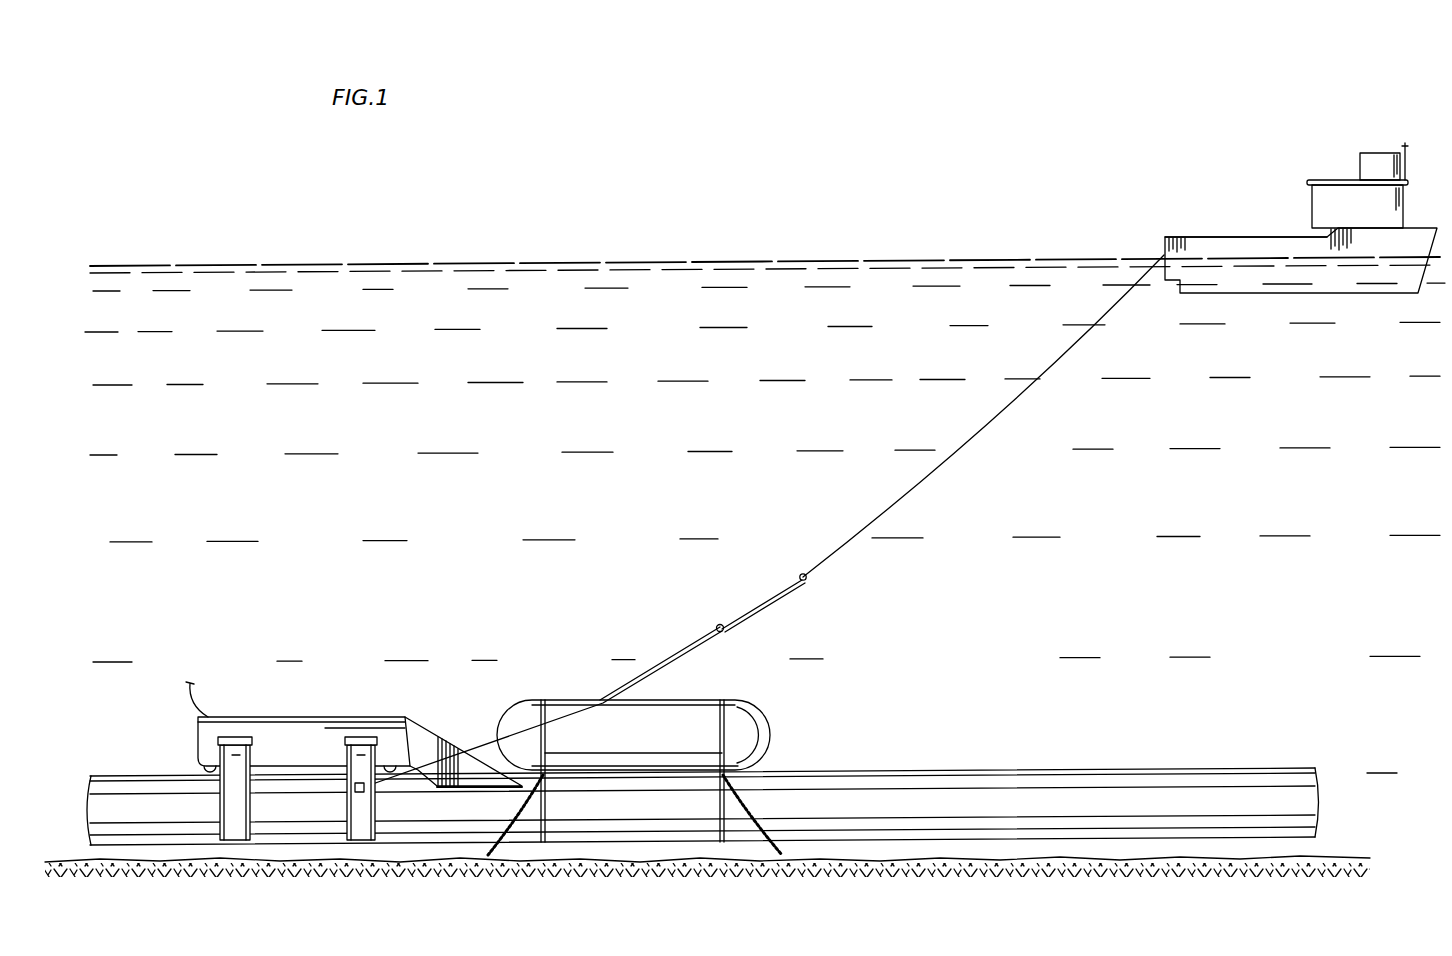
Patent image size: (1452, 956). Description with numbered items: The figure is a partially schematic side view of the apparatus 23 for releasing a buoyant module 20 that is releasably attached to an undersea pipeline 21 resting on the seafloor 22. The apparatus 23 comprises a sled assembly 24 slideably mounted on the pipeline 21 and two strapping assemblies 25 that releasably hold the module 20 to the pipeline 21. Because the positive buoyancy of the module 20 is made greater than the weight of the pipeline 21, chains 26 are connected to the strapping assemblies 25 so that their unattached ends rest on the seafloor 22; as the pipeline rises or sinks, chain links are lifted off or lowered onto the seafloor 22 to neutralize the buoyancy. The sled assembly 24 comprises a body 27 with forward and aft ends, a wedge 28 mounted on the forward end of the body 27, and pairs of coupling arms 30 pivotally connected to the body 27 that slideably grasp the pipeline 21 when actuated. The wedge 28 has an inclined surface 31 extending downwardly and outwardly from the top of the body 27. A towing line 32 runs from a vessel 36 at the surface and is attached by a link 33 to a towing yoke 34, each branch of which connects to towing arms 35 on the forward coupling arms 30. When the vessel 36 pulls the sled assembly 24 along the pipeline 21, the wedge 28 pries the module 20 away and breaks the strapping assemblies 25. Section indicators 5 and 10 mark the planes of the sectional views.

The buoyant module 20 is at (710, 700).
The undersea pipeline 21 is at (1072, 768).
The seafloor 22 is at (1080, 845).
The apparatus for releasing a buoyant module 23 is at (634, 601).
The sled assembly 24 is at (198, 740).
The strapping assemblies 25 is at (547, 808).
The chains 26 is at (523, 820).
The body 27 is at (260, 717).
The wedge 28 is at (433, 788).
The coupling arms 30 is at (343, 818).
The inclined surface 31 is at (437, 735).
The towing line 32 is at (978, 433).
The link 33 is at (803, 574).
The towing yoke 34 is at (724, 630).
The towing arms 35 is at (355, 787).
The vessel 36 is at (1232, 237).
The section line 5- 5 is at (357, 690).
The section line 10- 10 is at (533, 672).